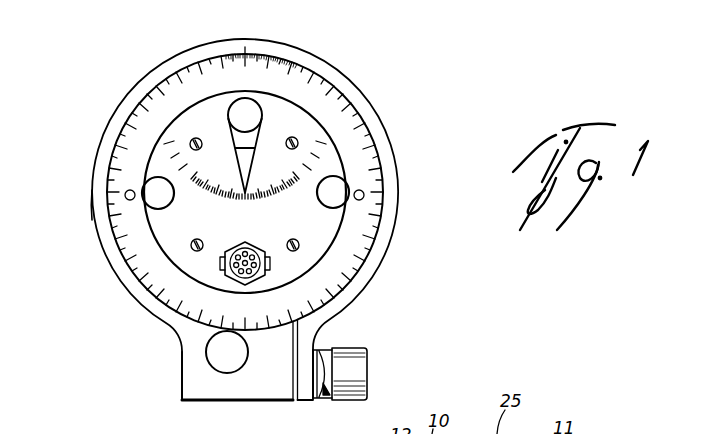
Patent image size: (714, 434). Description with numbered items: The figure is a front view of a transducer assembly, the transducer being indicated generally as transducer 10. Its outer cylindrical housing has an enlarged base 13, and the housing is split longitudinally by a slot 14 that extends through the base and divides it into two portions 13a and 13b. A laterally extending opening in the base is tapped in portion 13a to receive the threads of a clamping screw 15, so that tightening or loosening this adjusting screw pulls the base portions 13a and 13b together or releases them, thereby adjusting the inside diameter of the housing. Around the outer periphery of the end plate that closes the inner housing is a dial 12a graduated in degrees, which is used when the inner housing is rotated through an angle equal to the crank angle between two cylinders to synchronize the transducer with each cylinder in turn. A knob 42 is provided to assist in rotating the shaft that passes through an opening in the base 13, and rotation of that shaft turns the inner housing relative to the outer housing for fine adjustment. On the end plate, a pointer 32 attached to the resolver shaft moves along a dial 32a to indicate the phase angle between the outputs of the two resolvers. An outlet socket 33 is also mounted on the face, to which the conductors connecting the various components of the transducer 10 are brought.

The transducer 10 is at (92, 206).
The dial 12a is at (330, 93).
The enlarged base 13 is at (202, 405).
The base portion 13a is at (181, 373).
The base portion 13b is at (304, 404).
The slot 14 is at (295, 405).
The clamping screw 15 is at (356, 373).
The pointer 32 is at (249, 162).
The dial 32a is at (279, 199).
The outlet socket 33 is at (258, 281).
The knob 42 is at (232, 363).